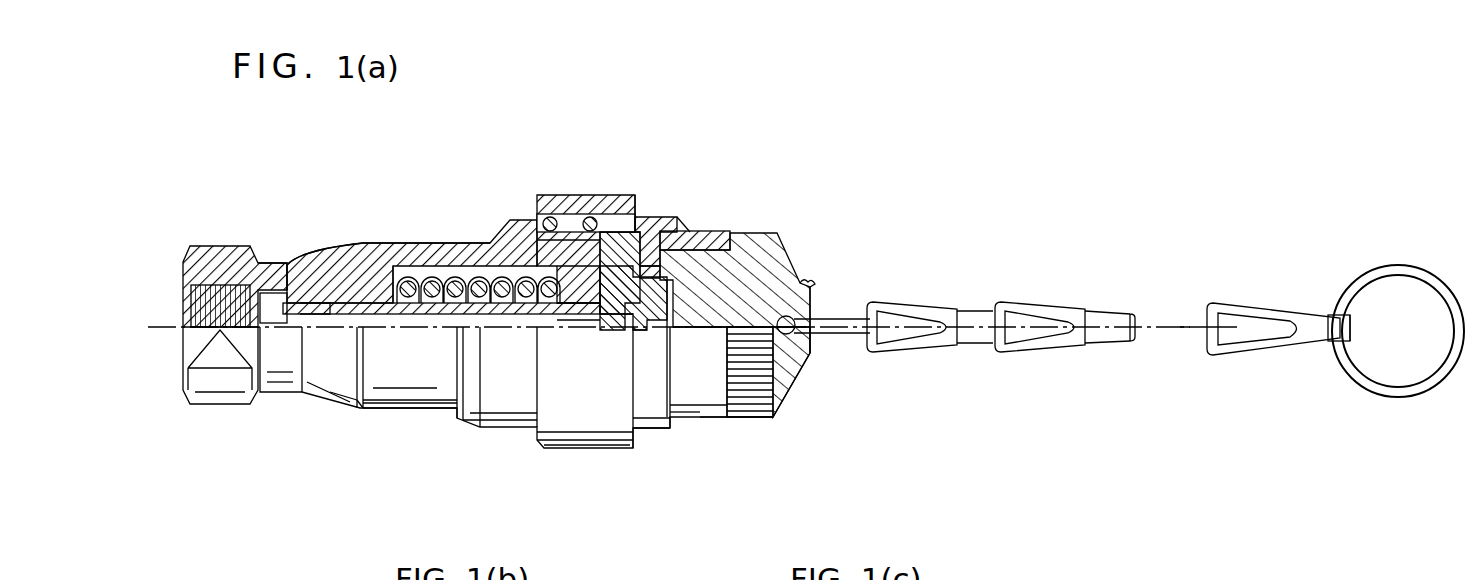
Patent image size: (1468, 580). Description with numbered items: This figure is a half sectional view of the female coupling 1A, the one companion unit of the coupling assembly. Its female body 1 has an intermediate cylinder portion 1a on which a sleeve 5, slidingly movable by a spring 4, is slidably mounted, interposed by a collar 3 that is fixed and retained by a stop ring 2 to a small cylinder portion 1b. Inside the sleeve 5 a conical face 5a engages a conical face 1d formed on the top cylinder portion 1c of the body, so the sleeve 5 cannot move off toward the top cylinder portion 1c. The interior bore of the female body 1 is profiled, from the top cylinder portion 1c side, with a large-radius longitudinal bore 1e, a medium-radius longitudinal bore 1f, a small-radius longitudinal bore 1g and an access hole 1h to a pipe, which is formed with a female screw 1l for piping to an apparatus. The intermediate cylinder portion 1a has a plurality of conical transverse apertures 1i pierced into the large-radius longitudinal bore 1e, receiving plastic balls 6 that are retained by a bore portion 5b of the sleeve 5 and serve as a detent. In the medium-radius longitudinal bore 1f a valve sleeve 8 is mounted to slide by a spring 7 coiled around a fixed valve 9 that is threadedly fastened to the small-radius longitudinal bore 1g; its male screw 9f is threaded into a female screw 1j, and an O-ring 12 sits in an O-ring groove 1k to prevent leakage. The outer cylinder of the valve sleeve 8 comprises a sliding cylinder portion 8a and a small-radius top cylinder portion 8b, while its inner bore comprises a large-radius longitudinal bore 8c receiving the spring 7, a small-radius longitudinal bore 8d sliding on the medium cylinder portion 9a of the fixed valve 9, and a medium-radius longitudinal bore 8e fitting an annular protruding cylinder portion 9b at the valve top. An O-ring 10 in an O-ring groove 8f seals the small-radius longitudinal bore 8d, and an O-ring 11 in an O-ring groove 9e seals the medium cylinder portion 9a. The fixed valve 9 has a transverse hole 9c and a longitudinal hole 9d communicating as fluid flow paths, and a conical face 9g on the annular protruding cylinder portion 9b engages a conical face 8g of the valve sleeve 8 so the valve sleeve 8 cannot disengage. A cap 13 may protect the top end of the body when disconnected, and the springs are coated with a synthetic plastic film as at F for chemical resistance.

The female coupling 1A is at (580, 102).
The female body 1 is at (395, 265).
The intermediate cylinder portion 1a is at (553, 225).
The small cylinder portion 1b is at (413, 238).
The top cylinder portion 1c is at (705, 255).
The conical face 1d is at (697, 220).
The large-radius longitudinal bore 1e is at (800, 347).
The medium-radius longitudinal bore 1f is at (383, 260).
The small-radius longitudinal bore 1g is at (413, 395).
The access hole to a pipe 1h is at (258, 268).
The conical transverse apertures 1i is at (625, 225).
The female screw 1j is at (282, 320).
The O-ring groove 1k is at (352, 340).
The female screw 1l is at (213, 250).
The stop ring 2 is at (452, 270).
The collar 3 is at (498, 315).
The spring 4 is at (578, 240).
The sleeve 5 is at (645, 222).
The conical face 5a is at (706, 222).
The bore portion 5b is at (667, 222).
The plastic balls 6 is at (795, 337).
The spring 7 is at (486, 280).
The valve sleeve 8 is at (500, 233).
The sliding cylinder portion 8a is at (520, 220).
The small-radius top cylinder portion 8b is at (777, 390).
The large-radius longitudinal bore 8c is at (502, 340).
The small-radius longitudinal bore 8d is at (548, 340).
The medium-radius longitudinal bore 8e is at (745, 418).
The O-ring groove 8f is at (593, 220).
The conical face 8g is at (715, 420).
The fixed valve 9 is at (700, 413).
The medium cylinder portion 9a is at (440, 295).
The annular protruding cylinder portion 9b is at (775, 415).
The transverse hole 9c is at (575, 330).
The longitudinal hole 9d is at (345, 335).
The O-ring groove 9e is at (667, 413).
The male screw 9f is at (313, 303).
The conical face 9g is at (600, 330).
The O-ring 10 is at (553, 330).
The O-ring 11 is at (628, 330).
The O-ring 12 is at (383, 400).
The cap 13 is at (818, 286).
The synthetic plastic film F is at (453, 232).